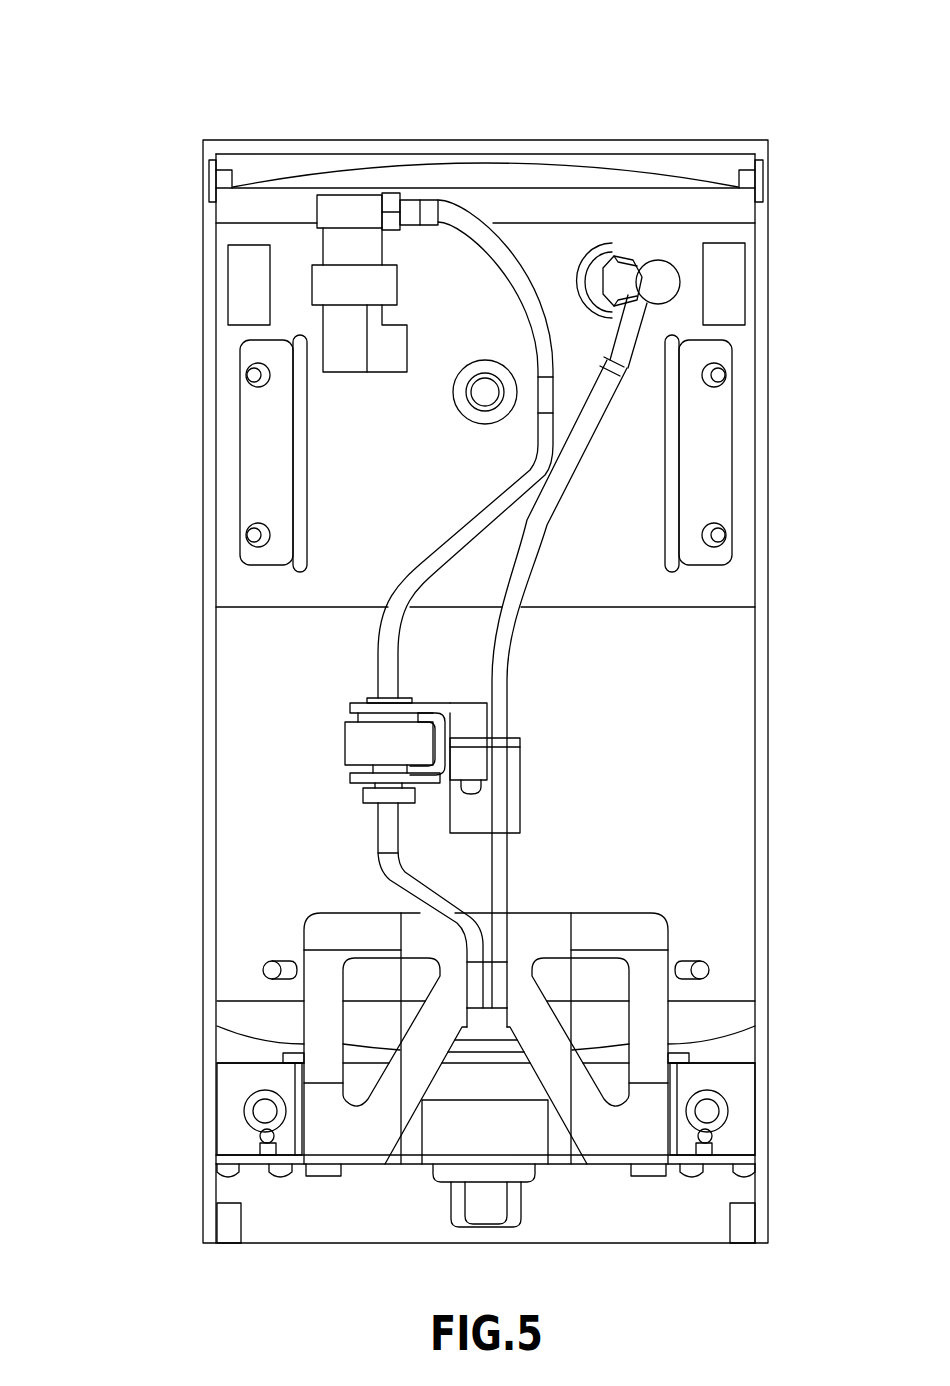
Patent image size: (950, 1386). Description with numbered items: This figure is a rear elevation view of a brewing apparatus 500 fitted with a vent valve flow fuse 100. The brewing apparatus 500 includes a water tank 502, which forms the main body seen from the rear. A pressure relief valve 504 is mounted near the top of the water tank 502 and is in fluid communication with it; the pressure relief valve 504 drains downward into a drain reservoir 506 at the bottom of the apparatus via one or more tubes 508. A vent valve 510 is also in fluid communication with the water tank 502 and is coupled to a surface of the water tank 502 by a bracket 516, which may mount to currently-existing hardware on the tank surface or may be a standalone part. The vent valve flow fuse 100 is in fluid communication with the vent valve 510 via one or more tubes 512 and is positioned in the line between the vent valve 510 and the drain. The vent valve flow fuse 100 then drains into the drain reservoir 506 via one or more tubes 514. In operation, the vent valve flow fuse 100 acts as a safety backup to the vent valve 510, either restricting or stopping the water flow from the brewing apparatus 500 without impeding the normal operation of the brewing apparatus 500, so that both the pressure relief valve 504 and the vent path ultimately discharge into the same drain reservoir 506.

The brewing apparatus 500 is at (156, 46).
The water tank 502 is at (740, 742).
The pressure relief valve 504 is at (662, 280).
The drain reservoir 506 is at (511, 1213).
The tubes 508 is at (500, 881).
The vent valve 510 is at (352, 252).
The tubes 512 is at (403, 603).
The vent valve flow fuse 100 is at (372, 700).
The tubes 514 is at (393, 873).
The bracket 516 is at (448, 775).